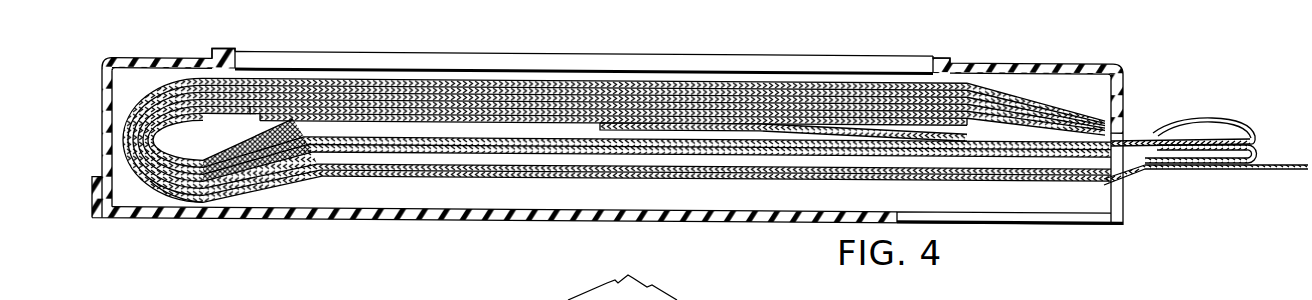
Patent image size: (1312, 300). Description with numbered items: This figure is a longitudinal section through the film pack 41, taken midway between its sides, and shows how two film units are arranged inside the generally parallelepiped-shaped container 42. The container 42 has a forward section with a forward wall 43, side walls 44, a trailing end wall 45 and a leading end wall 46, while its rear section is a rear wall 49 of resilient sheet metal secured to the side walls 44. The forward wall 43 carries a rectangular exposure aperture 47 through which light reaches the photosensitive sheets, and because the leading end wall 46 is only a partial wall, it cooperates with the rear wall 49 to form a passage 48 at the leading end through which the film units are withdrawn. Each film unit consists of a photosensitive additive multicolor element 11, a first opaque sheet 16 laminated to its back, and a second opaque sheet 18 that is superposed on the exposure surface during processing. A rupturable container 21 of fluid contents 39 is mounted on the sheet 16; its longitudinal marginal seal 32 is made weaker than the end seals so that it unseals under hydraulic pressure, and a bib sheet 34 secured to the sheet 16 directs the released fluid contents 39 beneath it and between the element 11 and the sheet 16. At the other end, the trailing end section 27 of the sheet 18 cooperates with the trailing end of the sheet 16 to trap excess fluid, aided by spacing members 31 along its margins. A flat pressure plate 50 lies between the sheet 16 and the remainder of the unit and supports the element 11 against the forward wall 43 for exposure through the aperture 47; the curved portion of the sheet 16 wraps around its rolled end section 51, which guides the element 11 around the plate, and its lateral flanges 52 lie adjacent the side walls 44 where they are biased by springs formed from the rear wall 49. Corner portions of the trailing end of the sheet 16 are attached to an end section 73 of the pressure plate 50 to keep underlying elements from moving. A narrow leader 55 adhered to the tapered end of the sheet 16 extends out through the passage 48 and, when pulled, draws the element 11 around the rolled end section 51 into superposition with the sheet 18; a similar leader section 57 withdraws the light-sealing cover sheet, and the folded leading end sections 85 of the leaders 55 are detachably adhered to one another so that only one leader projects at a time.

The photosensitive additive multicolor element 11 is at (366, 118).
The first opaque sheet 16 is at (337, 118).
The second opaque sheet 18 is at (344, 174).
The rupturable container 21 is at (324, 174).
The trailing end section 27 is at (273, 188).
The spacing members 31 is at (267, 198).
The longitudinal marginal seal 32 is at (207, 198).
The bib sheet 34 is at (170, 188).
The fluid contents 39 is at (233, 201).
The film pack 41 is at (566, 48).
The container 42 is at (1134, 72).
The forward wall 43 is at (973, 70).
The side walls 44 is at (129, 82).
The trailing end wall 45 is at (103, 130).
The leading end wall 46 is at (1127, 86).
The exposure aperture 47 is at (228, 56).
The passage 48 is at (1118, 190).
The rear wall 49 is at (447, 220).
The pressure plate 50 is at (263, 113).
The rolled end section 51 is at (174, 118).
The lateral flanges 52 is at (226, 146).
The leader 55 is at (1129, 142).
The leader section 57 is at (1268, 170).
The end section 73 is at (990, 113).
The leading end sections 85 is at (1212, 120).